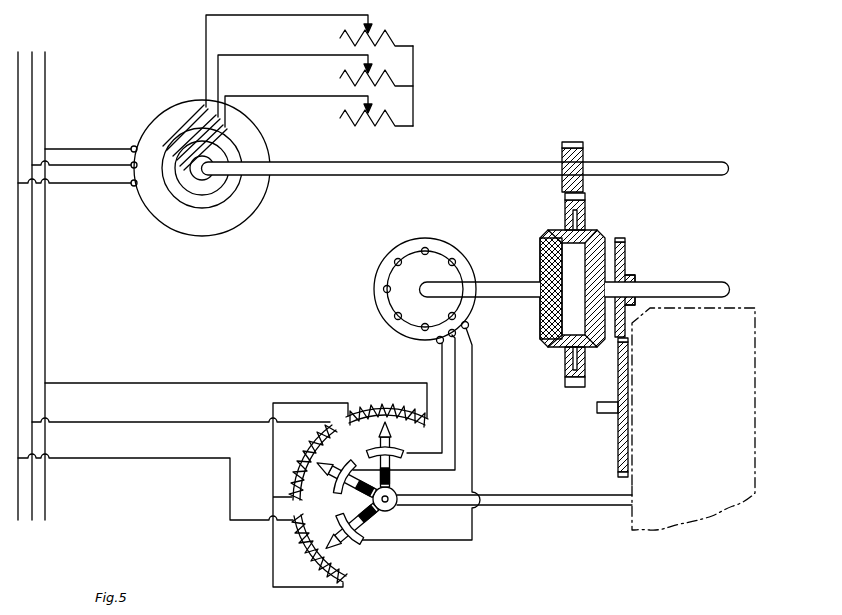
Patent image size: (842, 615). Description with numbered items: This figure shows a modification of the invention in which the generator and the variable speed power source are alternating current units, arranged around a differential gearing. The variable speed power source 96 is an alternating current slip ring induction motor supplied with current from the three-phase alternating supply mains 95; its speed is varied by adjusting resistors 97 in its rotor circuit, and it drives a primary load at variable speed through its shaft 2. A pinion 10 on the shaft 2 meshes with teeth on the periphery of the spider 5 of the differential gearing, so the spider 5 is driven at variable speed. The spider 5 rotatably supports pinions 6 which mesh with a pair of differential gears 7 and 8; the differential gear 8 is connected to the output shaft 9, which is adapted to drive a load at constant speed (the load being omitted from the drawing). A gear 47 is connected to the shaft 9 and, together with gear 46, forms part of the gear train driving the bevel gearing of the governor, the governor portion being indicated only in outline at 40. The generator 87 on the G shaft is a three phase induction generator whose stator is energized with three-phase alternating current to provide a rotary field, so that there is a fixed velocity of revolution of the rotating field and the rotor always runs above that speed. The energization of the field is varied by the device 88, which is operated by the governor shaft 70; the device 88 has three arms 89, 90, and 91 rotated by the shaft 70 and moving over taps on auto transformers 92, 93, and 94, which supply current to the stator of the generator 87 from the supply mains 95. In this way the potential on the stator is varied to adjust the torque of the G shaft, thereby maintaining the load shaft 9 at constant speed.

The shaft 2 is at (488, 161).
The spider 5 is at (586, 216).
The pinions 6 is at (560, 228).
The differential gear 7 is at (545, 240).
The differential gear 8 is at (611, 240).
The output shaft 9 is at (691, 282).
The pinion 10 is at (584, 155).
The housing 40 is at (631, 518).
The gear 46 is at (618, 437).
The gear 47 is at (627, 266).
The governor shaft 70 is at (535, 495).
The generator 87 is at (454, 254).
The device 88 is at (404, 512).
The arm 89 is at (337, 534).
The arm 90 is at (342, 470).
The arm 91 is at (392, 437).
The auto transformer 92 is at (307, 560).
The auto transformer 93 is at (303, 448).
The auto transformer 94 is at (402, 401).
The supply mains 95 is at (27, 504).
The variable speed power source 96 is at (198, 238).
The resistors 97 is at (337, 40).
The G shaft G is at (512, 282).